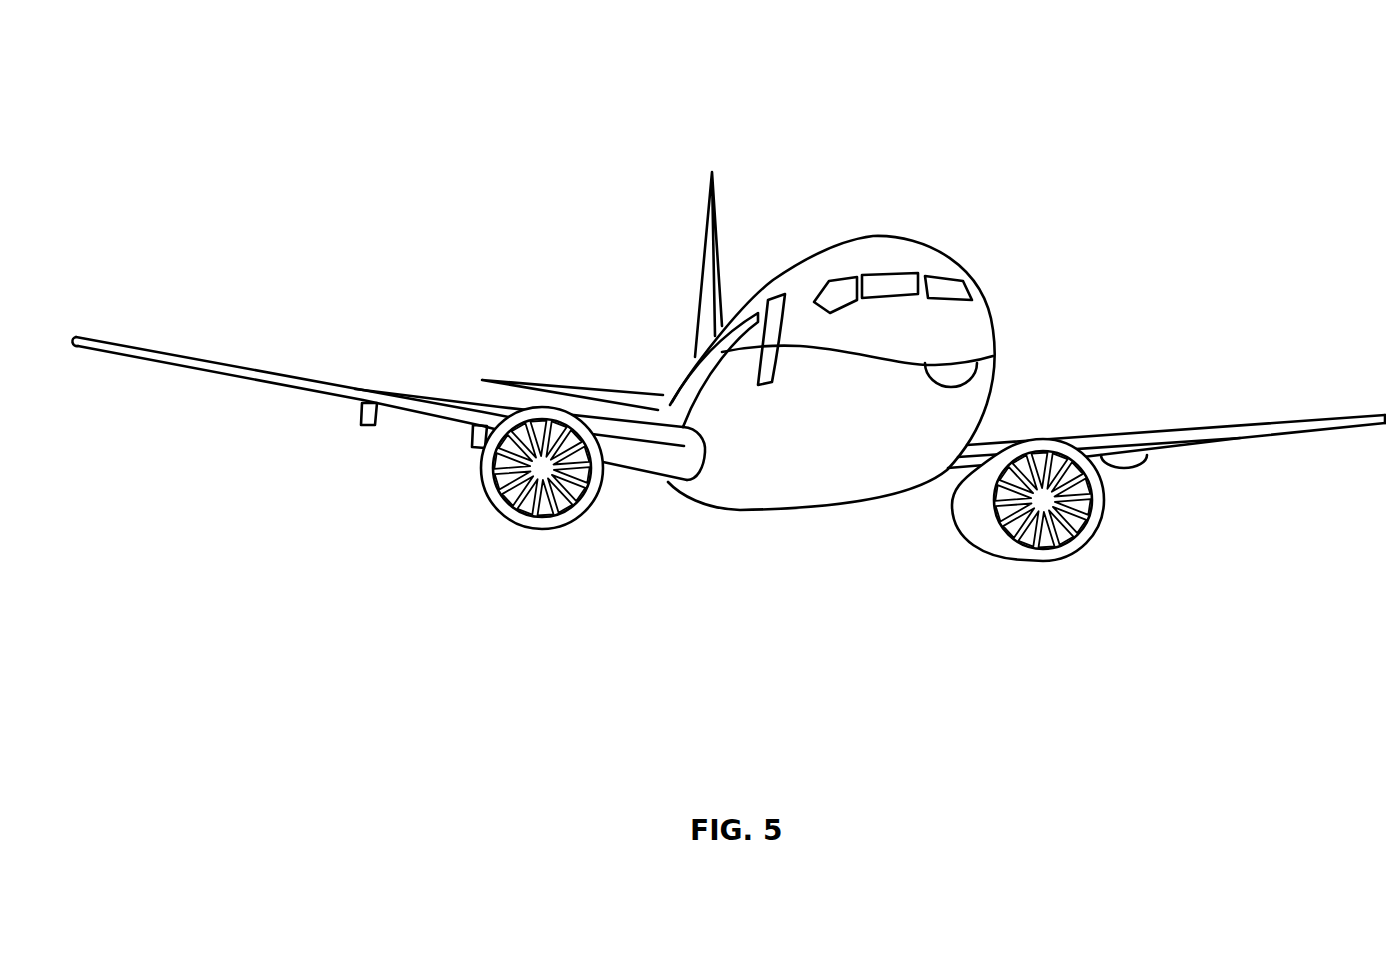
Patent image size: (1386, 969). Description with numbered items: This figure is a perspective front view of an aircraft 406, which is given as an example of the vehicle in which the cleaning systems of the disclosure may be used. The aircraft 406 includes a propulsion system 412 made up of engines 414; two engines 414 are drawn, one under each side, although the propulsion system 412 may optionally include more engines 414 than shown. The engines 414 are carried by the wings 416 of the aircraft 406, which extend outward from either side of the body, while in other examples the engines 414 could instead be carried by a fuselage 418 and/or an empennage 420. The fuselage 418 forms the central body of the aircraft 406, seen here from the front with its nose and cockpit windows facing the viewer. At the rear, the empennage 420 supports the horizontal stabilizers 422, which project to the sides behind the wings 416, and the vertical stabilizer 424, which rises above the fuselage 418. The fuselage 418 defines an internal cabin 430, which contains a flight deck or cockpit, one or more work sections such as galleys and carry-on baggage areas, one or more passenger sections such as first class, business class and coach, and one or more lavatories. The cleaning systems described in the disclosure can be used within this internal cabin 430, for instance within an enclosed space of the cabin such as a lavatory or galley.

The aircraft 406 is at (404, 100).
The propulsion system 412 is at (410, 498).
The engines 414 is at (535, 527).
The wings 416 is at (253, 370).
The fuselage 418 is at (993, 318).
The empennage 420 is at (697, 357).
The horizontal stabilizers 422 is at (532, 380).
The vertical stabilizer 424 is at (707, 223).
The internal cabin 430 is at (893, 285).